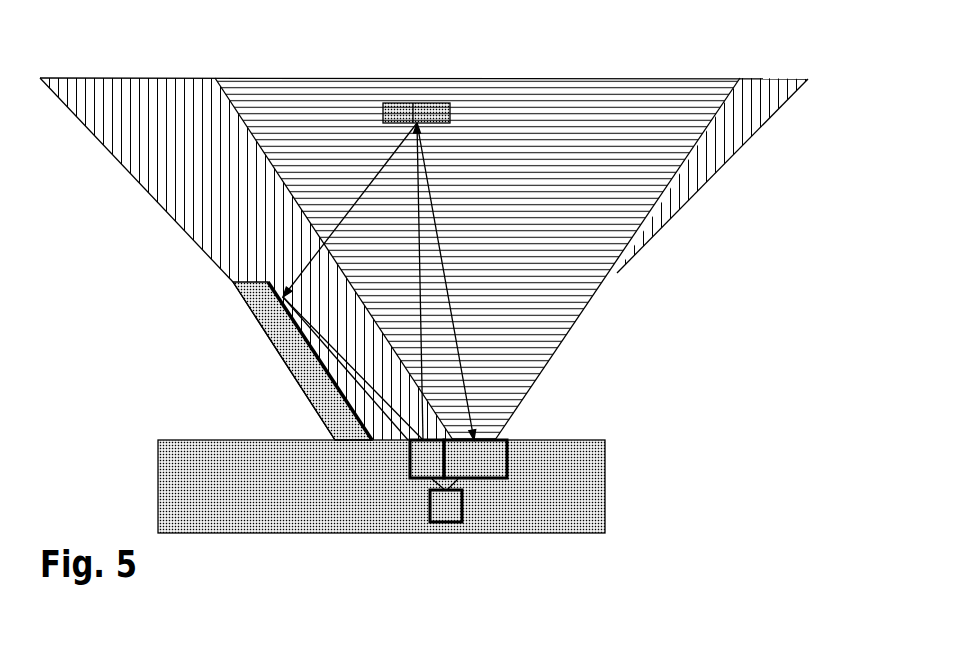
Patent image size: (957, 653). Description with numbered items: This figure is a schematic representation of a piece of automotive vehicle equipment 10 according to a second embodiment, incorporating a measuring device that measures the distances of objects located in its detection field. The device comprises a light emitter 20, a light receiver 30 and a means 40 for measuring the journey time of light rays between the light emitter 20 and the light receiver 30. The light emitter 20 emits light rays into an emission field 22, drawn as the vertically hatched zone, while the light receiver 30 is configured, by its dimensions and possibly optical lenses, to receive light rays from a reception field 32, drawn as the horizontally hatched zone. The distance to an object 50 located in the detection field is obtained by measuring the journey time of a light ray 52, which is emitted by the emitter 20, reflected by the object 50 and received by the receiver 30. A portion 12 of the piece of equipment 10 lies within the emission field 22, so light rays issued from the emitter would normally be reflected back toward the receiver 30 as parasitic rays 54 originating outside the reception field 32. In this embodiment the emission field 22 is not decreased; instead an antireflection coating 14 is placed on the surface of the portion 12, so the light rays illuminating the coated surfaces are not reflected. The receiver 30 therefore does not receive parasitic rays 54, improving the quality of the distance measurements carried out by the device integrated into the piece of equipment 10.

The piece of automotive vehicle equipment 10 is at (633, 477).
The portion of the piece of equipment 12 is at (290, 368).
The antireflection coating 14 is at (295, 335).
The light emitter 20 is at (418, 462).
The emission field 22 is at (185, 85).
The light receiver 30 is at (492, 462).
The reception field 32 is at (617, 98).
The means for measuring the journey time 40 is at (438, 508).
The object 50 is at (409, 102).
The light ray 52 is at (417, 203).
The parasitic rays 54 is at (317, 408).